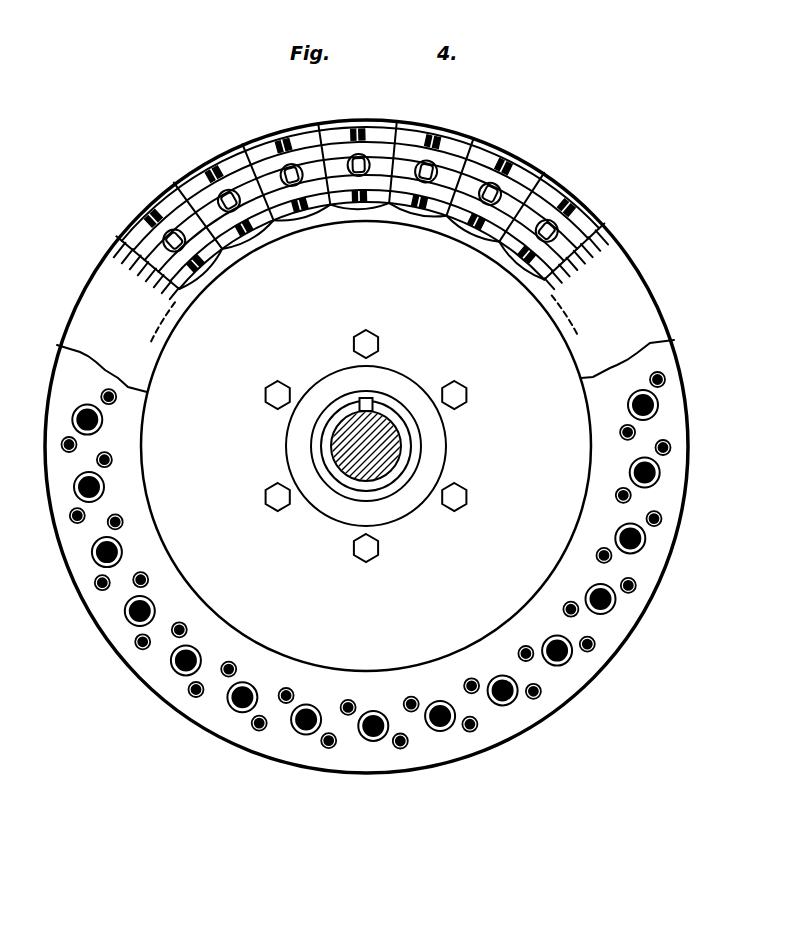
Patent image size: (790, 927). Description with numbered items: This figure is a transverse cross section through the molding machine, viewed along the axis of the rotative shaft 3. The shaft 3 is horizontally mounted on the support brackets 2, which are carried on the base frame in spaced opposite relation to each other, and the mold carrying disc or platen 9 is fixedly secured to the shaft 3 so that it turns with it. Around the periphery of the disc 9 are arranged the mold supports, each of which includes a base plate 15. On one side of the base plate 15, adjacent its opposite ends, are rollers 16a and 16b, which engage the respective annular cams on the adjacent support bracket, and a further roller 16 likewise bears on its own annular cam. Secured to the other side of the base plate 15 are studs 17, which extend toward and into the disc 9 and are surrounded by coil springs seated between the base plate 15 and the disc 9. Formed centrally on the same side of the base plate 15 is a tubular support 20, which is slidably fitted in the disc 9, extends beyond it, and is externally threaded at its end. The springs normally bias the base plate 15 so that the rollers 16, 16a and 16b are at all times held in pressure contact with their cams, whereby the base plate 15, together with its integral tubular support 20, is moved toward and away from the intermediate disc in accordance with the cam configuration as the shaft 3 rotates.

The support brackets 2 is at (203, 387).
The rotative shaft 3 is at (380, 463).
The mold carrying disc 9 is at (568, 697).
The base plate 15 is at (363, 213).
The roller 16 is at (220, 168).
The roller 16a is at (247, 190).
The roller 16b is at (200, 183).
The studs 17 is at (222, 682).
The tubular support 20 is at (130, 618).